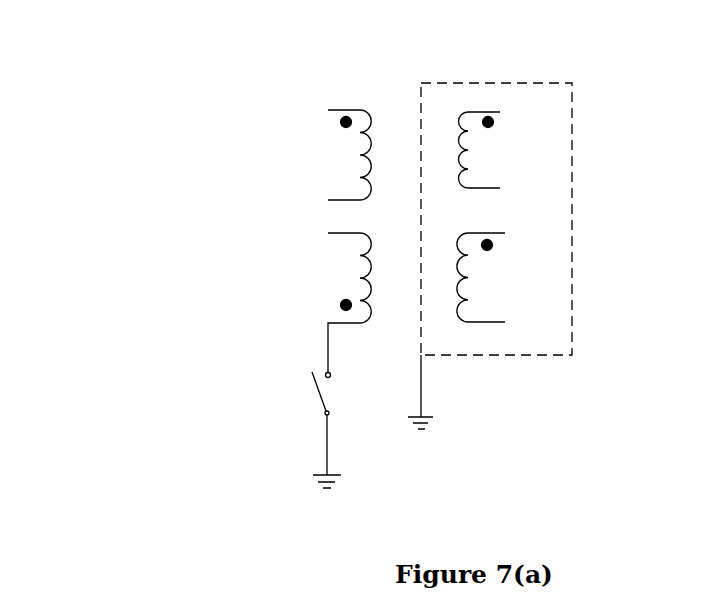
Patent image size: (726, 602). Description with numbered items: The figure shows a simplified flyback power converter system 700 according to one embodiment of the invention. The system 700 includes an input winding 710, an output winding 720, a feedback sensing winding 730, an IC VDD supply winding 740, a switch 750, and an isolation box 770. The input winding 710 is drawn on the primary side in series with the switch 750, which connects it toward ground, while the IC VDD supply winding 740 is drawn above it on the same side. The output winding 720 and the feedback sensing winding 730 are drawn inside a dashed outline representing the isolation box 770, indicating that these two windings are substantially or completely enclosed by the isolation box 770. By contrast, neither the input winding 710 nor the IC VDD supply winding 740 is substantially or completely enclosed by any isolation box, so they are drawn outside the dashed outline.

The flyback power converter system 700 is at (84, 52).
The input winding 710 is at (369, 247).
The output winding 720 is at (464, 186).
The feedback sensing winding 730 is at (463, 322).
The IC VDD supply winding 740 is at (370, 110).
The switch 750 is at (322, 400).
The isolation box 770 is at (573, 277).